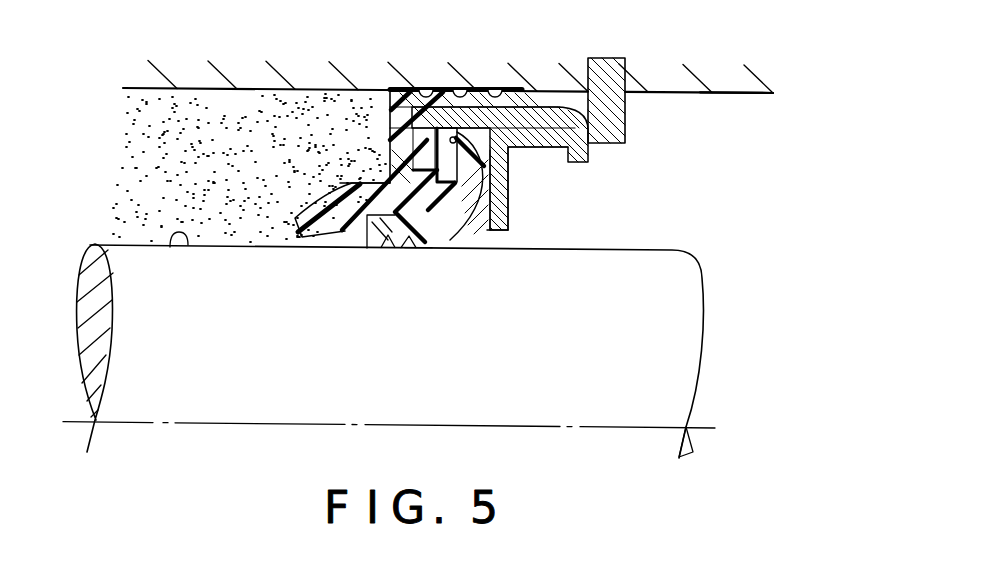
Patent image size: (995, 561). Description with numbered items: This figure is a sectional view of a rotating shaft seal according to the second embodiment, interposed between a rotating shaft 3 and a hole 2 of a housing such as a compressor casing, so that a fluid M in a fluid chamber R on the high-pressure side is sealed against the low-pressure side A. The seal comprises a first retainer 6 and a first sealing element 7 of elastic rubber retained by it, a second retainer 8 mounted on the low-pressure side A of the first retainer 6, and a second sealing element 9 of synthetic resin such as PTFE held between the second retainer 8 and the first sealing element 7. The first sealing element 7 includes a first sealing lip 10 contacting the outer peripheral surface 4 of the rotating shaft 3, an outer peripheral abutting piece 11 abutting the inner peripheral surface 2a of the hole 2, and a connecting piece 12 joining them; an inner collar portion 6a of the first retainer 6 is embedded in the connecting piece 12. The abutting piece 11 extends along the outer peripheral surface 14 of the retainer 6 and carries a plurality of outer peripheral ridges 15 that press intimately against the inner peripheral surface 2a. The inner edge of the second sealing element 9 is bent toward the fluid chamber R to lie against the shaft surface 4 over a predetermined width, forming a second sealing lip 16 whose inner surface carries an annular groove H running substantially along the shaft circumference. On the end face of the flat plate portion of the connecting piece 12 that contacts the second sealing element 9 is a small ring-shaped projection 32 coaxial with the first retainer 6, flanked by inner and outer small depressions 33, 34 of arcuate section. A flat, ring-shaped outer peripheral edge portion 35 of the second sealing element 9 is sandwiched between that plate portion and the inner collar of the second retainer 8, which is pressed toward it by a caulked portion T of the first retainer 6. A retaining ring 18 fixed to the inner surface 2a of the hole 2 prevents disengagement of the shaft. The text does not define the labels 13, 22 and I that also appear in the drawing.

The hole 2 is at (745, 107).
The inner peripheral surface 2a is at (757, 96).
The rotating shaft 3 is at (683, 235).
The outer peripheral surface 4 is at (170, 247).
The first retainer 6 is at (562, 100).
The inner collar portion 6a is at (427, 142).
The first sealing element 7 is at (380, 92).
The second retainer 8 is at (517, 218).
The second sealing element 9 is at (473, 202).
The first sealing lip 10 is at (338, 240).
The outer peripheral abutting piece 11 is at (463, 94).
The connecting piece 12 is at (437, 150).
The side lip 13 is at (308, 248).
The outer peripheral surface 14 is at (496, 94).
The outer peripheral ridges 15 is at (423, 94).
The second sealing lip 16 is at (445, 188).
The retaining ring 18 is at (608, 66).
The sliding surface 22 is at (418, 265).
The small ring-shaped projection 32 is at (472, 178).
The inner small depression 33 is at (497, 185).
The outer small depression 34 is at (494, 152).
The outer peripheral edge portion 35 is at (497, 172).
The annular groove H is at (409, 250).
The caulked portion T is at (648, 189).
The low-pressure side A is at (714, 171).
The fluid chamber R is at (208, 172).
The fluid M is at (136, 122).
The inside I is at (244, 48).